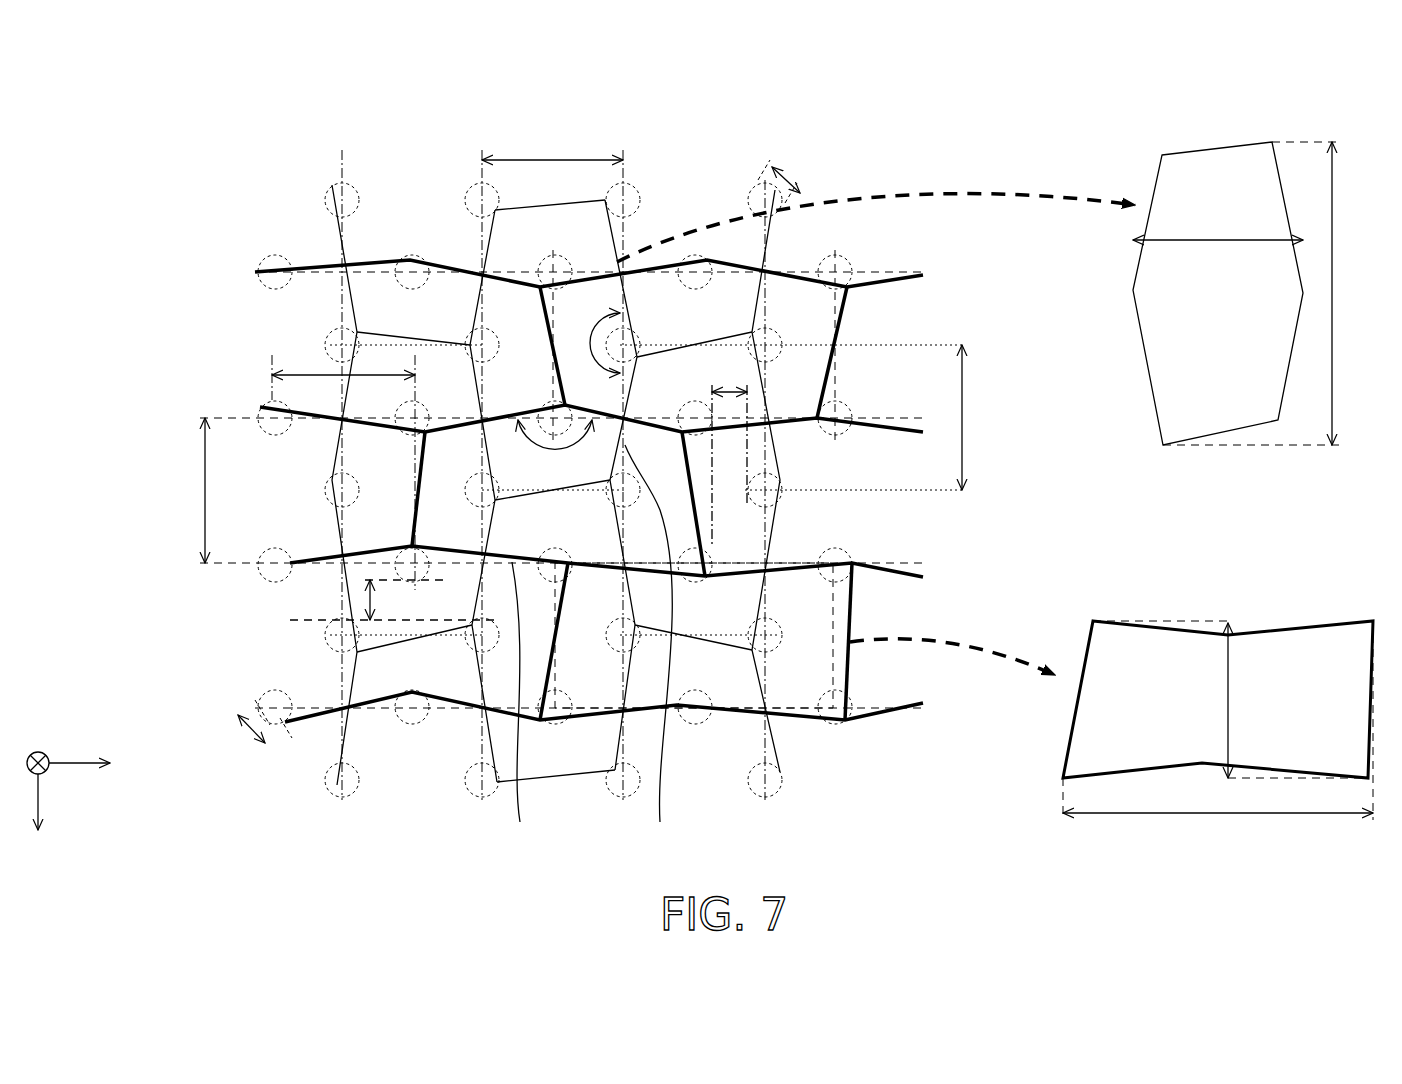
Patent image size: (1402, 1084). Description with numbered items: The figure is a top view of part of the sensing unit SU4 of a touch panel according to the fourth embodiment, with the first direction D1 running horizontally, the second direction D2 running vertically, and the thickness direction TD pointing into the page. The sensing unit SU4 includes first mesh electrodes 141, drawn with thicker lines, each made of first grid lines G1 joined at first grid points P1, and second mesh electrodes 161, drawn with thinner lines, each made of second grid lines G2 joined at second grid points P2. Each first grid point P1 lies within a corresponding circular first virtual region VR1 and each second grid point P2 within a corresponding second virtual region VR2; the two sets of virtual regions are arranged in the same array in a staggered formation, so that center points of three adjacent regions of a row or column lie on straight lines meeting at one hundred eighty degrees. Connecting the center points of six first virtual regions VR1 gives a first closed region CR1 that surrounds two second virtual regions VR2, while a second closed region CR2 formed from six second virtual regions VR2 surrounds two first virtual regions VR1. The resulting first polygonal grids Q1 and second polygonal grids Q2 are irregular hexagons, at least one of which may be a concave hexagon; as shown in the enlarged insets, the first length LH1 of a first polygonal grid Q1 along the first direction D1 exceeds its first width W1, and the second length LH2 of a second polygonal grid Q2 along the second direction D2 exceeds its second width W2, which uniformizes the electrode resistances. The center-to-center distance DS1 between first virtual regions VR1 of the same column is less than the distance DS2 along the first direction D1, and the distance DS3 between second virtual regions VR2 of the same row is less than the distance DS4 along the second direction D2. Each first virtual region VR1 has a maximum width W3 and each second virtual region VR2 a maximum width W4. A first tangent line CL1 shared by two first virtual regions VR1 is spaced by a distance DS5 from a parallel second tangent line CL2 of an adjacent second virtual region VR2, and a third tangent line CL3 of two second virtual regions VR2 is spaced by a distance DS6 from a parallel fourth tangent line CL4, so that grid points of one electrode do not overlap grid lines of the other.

The sensing unit SU4 is at (222, 152).
The first mesh electrode 141 is at (453, 137).
The first grid point P1 is at (403, 257).
The first grid line G1 is at (445, 267).
The second mesh electrode 161 is at (190, 233).
The second grid line G2 is at (338, 232).
The second grid point P2 is at (355, 333).
The first virtual region VR1 is at (262, 572).
The second virtual region VR2 is at (340, 190).
The distance DS1 is at (177, 490).
The distance DS2 is at (341, 466).
The distance DS3 is at (552, 144).
The distance DS4 is at (820, 417).
The distance DS5 is at (400, 600).
The distance DS6 is at (720, 377).
The first tangent line CL1 is at (308, 620).
The second tangent line CL2 is at (385, 578).
The third tangent line CL3 is at (748, 452).
The fourth tangent line CL4 is at (712, 518).
The first width W1 is at (1230, 699).
The second width W2 is at (1218, 224).
The maximum width W3 is at (250, 729).
The maximum width W4 is at (792, 177).
The first closed region CR1 is at (523, 706).
The second closed region CR2 is at (661, 648).
The first polygonal grid Q1 is at (600, 576).
The second polygonal grid Q2 is at (620, 255).
The first length LH1 is at (1218, 735).
The second length LH2 is at (1277, 293).
The thickness direction TD is at (32, 746).
The first direction D1 is at (100, 766).
The second direction D2 is at (40, 821).